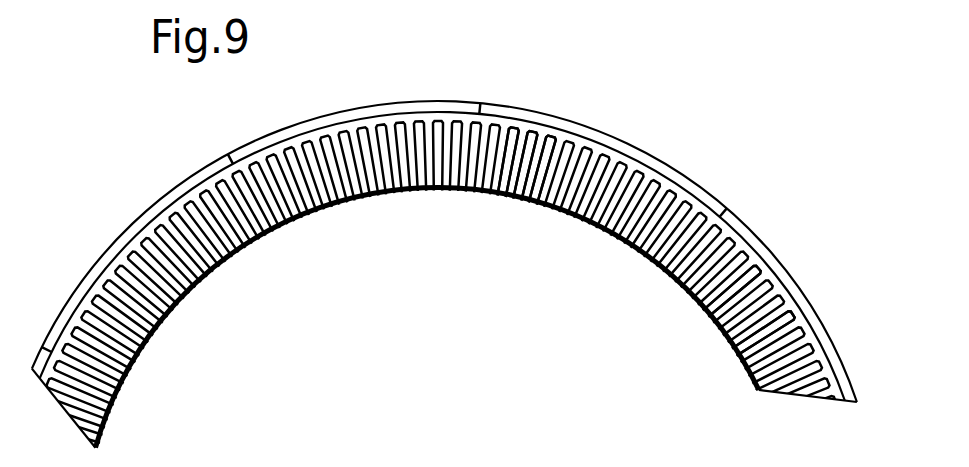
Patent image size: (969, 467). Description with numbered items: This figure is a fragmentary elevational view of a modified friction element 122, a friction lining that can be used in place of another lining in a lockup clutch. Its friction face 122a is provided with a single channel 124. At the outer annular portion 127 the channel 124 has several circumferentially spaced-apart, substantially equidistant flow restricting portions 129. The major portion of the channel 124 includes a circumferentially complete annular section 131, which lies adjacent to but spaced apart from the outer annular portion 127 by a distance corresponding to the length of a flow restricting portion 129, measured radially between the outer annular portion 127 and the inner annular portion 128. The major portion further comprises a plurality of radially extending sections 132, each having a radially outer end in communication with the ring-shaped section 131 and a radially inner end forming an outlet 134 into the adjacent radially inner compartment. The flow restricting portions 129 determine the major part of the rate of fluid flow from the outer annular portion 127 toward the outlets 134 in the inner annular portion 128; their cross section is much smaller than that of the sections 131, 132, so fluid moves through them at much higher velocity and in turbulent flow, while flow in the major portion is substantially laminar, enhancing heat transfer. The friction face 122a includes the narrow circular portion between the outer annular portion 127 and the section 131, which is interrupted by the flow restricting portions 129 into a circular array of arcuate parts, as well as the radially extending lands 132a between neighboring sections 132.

The friction element 122 is at (610, 175).
The friction face 122a is at (720, 210).
The channel 124 is at (752, 262).
The outer annular portion 127 is at (85, 275).
The inner annular portion 128 is at (125, 383).
The flow restricting portions 129 is at (232, 158).
The annular section 131 is at (788, 308).
The sections 132 is at (483, 190).
The lands 132a is at (540, 148).
The outlet 134 is at (197, 287).